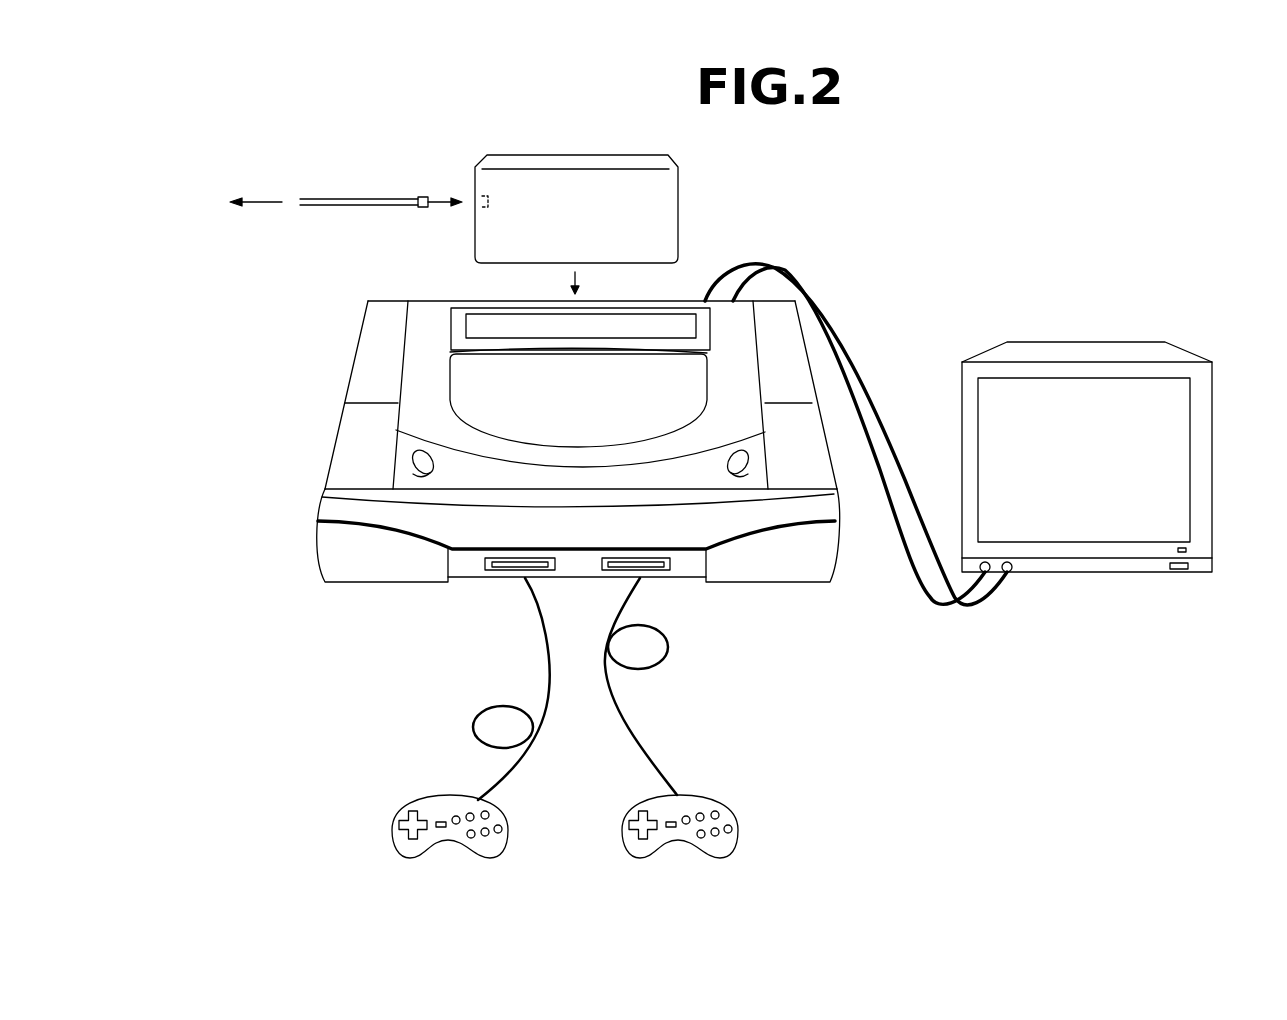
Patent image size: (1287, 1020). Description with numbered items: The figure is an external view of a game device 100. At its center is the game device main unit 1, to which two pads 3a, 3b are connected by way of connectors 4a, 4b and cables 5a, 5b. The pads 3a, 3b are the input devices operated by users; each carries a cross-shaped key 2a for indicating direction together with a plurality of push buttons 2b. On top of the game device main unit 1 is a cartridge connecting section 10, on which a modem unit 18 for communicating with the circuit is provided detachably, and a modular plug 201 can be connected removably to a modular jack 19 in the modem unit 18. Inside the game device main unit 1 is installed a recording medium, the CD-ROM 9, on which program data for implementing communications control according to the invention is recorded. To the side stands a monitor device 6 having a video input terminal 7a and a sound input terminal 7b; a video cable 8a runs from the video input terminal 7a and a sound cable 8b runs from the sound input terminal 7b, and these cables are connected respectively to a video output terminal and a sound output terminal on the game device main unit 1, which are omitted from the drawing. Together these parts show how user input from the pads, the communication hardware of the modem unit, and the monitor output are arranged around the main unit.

The game device main unit 1 is at (318, 511).
The cross-shaped key 2a is at (405, 847).
The push buttons 2b is at (496, 847).
The pad 3a is at (675, 847).
The pad 3b is at (436, 846).
The connector 4a is at (666, 584).
The connector 4b is at (486, 588).
The cable 5a is at (640, 746).
The cable 5b is at (473, 731).
The monitor device 6 is at (1212, 476).
The video input terminal 7a is at (1010, 571).
The sound input terminal 7b is at (983, 565).
The video cable 8a is at (866, 350).
The sound cable 8b is at (894, 520).
The CD-ROM 9 is at (662, 366).
The cartridge connecting section 10 is at (495, 318).
The modem unit 18 is at (681, 210).
The modular jack 19 is at (478, 200).
The game device 100 is at (277, 783).
The modular plug 201 is at (421, 208).